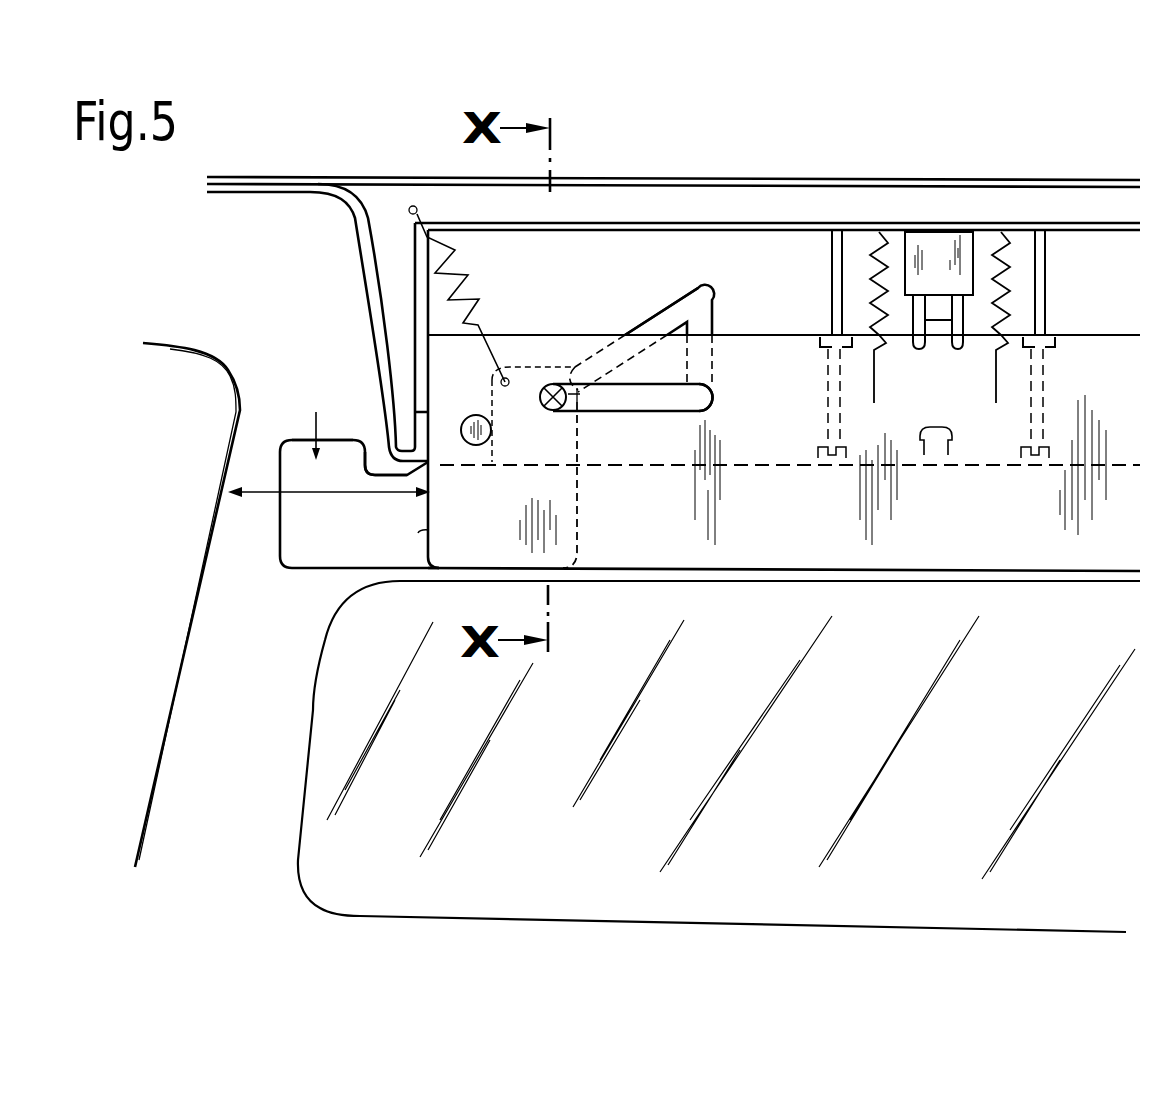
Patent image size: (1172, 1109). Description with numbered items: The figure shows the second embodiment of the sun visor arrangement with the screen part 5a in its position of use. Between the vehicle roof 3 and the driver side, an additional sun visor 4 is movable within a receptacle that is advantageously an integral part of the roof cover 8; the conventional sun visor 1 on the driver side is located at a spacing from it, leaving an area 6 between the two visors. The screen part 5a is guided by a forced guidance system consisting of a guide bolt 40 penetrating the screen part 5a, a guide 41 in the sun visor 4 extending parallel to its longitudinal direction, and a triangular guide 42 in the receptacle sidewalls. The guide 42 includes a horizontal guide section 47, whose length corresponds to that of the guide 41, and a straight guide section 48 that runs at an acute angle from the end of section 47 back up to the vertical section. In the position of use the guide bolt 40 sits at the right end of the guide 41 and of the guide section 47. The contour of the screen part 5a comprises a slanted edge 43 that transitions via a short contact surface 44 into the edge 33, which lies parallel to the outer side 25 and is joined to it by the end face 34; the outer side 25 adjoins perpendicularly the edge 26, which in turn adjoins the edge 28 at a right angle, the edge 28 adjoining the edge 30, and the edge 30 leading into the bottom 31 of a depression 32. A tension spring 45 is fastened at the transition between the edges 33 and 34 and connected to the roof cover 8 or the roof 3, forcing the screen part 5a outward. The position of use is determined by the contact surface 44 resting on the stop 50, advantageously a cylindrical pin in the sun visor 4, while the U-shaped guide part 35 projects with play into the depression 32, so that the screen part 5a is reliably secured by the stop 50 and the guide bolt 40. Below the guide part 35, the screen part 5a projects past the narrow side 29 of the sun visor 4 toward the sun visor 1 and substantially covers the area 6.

The sun visor 1 is at (162, 357).
The roof 3 is at (723, 180).
The sun visor 4 is at (765, 355).
The screen part 5a is at (323, 417).
The area 6 is at (359, 504).
The roof cover 8 is at (372, 260).
The outer side 25 is at (577, 512).
The edge 26 is at (553, 572).
The edge 28 is at (280, 503).
The narrow side 29 is at (418, 533).
The edge 30 is at (300, 438).
The bottom 31 is at (393, 478).
The depression 32 is at (377, 458).
The edge 33 is at (494, 412).
The end face 34 is at (526, 366).
The guide part 35 is at (403, 430).
The guide bolt 40 is at (556, 389).
The guide 41 is at (667, 413).
The triangular guide 42 is at (678, 283).
The slanted edge 43 is at (420, 473).
The contact surface 44 is at (480, 446).
The tension spring 45 is at (469, 281).
The guide section 47 is at (630, 397).
The guide section 48 is at (652, 330).
The stop 50 is at (473, 416).